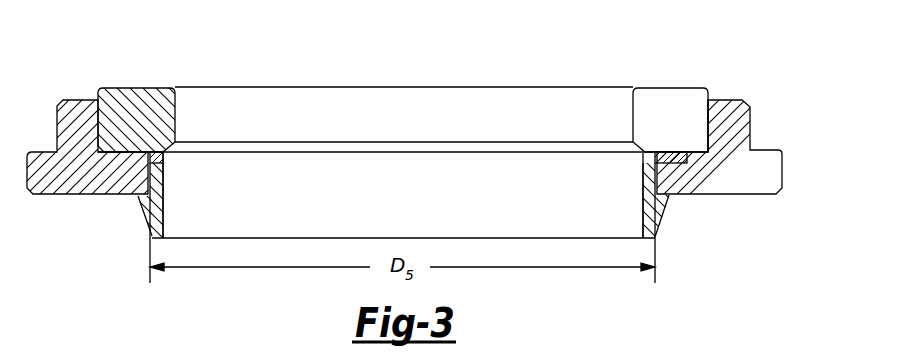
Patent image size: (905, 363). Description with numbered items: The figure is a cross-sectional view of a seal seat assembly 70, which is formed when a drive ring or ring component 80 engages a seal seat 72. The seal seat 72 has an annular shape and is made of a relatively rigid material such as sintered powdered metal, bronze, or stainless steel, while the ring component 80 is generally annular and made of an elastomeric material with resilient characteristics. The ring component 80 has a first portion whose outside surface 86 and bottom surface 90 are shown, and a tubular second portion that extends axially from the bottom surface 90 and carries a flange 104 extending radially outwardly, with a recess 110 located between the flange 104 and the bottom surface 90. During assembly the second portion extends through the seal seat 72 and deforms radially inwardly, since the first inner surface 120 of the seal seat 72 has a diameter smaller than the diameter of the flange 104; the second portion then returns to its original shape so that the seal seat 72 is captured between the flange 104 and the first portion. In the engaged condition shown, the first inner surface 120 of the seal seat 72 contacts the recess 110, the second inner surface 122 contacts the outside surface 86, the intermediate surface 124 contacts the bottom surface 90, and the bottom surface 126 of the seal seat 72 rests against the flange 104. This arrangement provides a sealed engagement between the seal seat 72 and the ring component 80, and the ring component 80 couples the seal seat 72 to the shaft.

The seal seat assembly 70 is at (477, 67).
The seal seat 72 is at (750, 108).
The ring component 80 is at (707, 91).
The outside surface 86 is at (708, 118).
The bottom surface 90 is at (657, 174).
The flange 104 is at (664, 198).
The recess 110 is at (660, 170).
The first inner surface 120 is at (150, 178).
The second inner surface 122 is at (99, 130).
The intermediate surface 124 is at (125, 157).
The bottom surface 126 is at (55, 195).